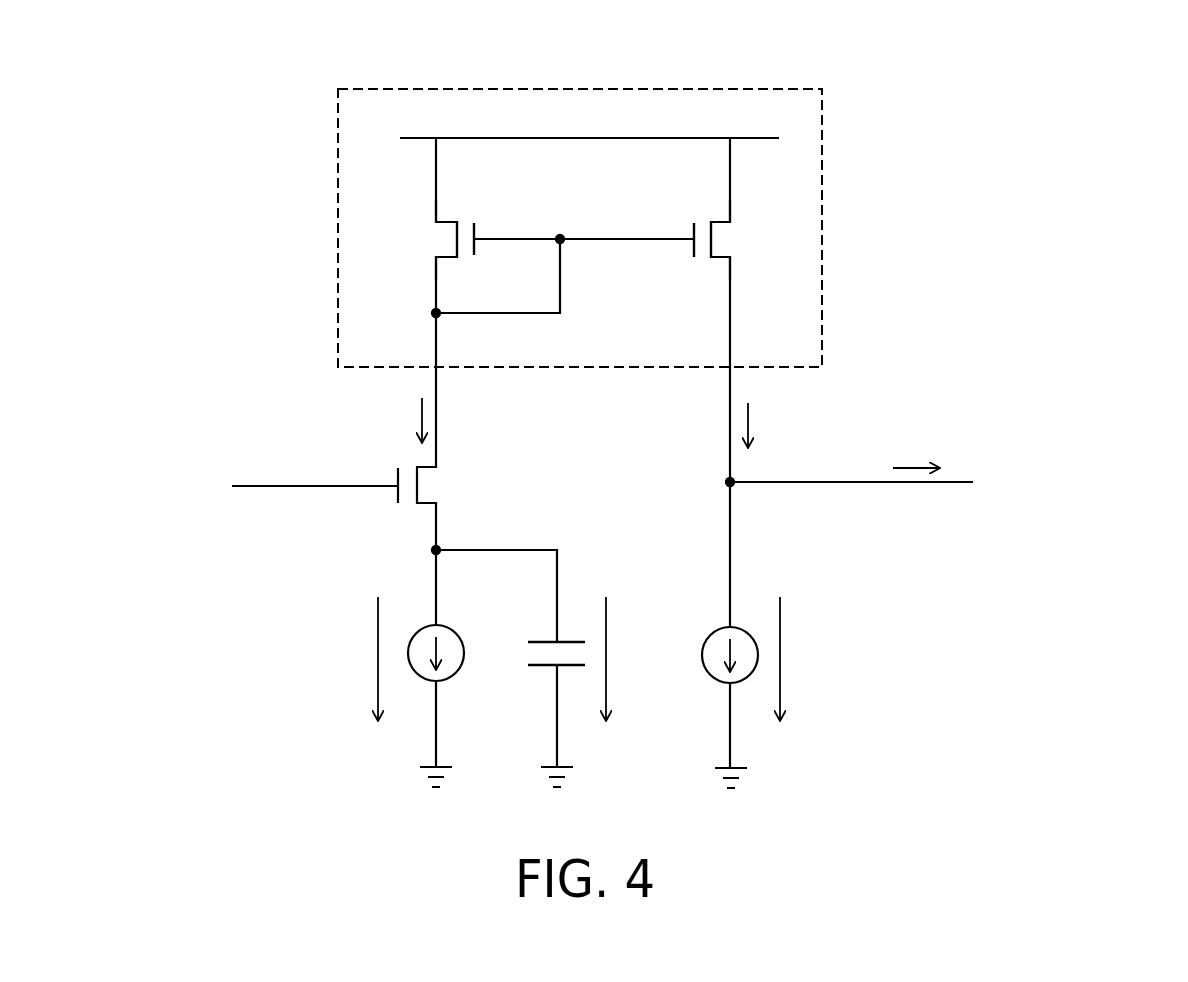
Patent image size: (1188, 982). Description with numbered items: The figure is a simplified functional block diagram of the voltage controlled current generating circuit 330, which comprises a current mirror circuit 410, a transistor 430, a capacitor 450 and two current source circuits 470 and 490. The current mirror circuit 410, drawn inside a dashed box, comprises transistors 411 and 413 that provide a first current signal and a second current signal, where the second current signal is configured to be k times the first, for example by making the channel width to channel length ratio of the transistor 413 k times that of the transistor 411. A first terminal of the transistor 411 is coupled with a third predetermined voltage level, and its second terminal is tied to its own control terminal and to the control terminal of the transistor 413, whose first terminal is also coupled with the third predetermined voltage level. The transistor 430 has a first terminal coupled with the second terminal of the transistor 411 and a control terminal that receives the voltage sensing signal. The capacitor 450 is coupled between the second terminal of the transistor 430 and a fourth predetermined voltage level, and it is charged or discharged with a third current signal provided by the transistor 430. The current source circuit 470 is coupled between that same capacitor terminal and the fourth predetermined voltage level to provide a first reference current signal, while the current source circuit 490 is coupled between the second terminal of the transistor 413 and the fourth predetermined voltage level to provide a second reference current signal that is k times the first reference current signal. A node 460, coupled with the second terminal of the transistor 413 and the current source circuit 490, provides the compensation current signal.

The voltage controlled current generating circuit 330 is at (1006, 89).
The current mirror circuit 410 is at (822, 224).
The transistor 411 is at (426, 239).
The transistor 413 is at (742, 241).
The transistor 430 is at (437, 487).
The capacitor 450 is at (535, 666).
The node 460 is at (738, 497).
The current source circuit 470 is at (417, 632).
The current source circuit 490 is at (713, 630).